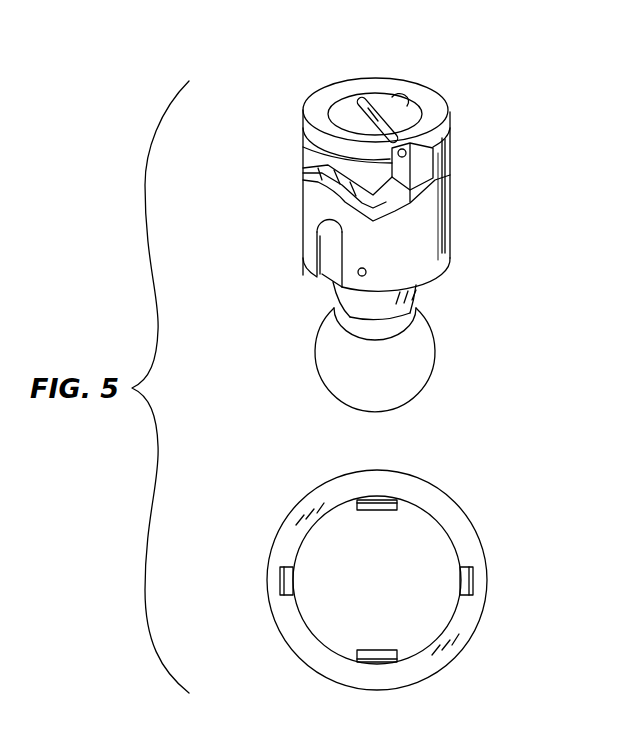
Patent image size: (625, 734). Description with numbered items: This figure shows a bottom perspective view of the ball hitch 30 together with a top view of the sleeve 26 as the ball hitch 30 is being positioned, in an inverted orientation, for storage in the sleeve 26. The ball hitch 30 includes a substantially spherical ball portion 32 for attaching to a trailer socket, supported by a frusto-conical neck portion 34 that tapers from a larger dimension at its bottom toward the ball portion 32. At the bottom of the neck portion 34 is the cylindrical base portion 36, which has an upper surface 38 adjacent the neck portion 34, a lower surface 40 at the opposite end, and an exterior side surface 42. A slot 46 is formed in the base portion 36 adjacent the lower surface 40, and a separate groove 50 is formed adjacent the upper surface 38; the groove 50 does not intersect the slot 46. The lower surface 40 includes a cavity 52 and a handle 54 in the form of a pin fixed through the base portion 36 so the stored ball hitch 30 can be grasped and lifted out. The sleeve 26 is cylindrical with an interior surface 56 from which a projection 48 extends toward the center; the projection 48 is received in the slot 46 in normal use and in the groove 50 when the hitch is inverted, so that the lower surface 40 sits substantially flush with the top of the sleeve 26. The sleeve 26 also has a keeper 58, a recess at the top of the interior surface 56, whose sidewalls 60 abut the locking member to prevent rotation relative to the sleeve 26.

The sleeve 26 is at (473, 640).
The ball hitch 30 is at (442, 207).
The ball portion 32 is at (413, 363).
The neck portion 34 is at (422, 310).
The base portion 36 is at (450, 162).
The upper surface 38 is at (313, 273).
The lower surface 40 is at (437, 118).
The exterior side surface 42 is at (303, 217).
The slot 46 is at (308, 182).
The projection 48 is at (380, 512).
The groove 50 is at (445, 253).
The cavity 52 is at (397, 97).
The handle 54 is at (367, 102).
The interior surface 56 is at (433, 530).
The keeper 58 is at (292, 582).
The sidewalls 60 is at (292, 572).